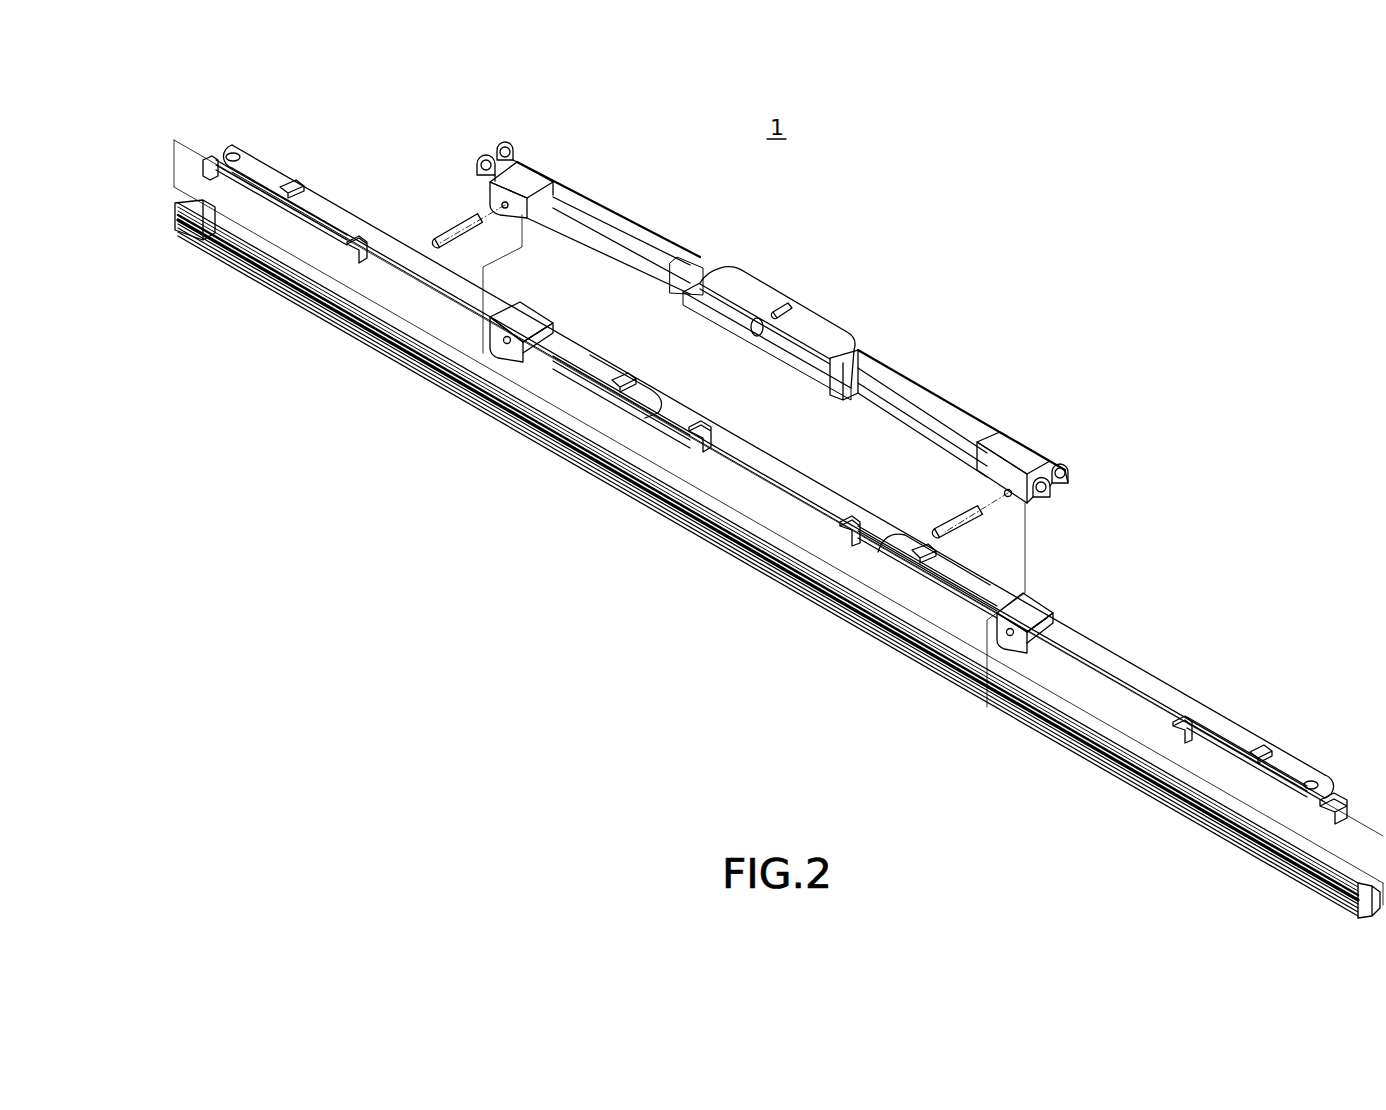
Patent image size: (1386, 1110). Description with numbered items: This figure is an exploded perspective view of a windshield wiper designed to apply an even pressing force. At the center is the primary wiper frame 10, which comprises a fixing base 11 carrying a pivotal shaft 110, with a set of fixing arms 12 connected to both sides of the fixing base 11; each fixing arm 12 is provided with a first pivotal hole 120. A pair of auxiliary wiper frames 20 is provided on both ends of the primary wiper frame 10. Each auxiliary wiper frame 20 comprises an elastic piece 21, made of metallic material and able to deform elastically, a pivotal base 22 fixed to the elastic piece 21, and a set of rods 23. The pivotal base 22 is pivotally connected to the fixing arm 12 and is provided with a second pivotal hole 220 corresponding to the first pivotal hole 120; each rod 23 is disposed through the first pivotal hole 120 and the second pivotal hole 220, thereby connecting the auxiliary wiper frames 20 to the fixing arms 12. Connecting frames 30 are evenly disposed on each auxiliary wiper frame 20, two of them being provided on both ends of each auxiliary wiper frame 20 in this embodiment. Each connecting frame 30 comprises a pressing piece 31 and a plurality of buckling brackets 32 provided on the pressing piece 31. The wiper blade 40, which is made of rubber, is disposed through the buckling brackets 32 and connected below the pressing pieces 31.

The primary wiper frame 10 is at (750, 322).
The fixing base 11 is at (733, 311).
The pivotal shaft 110 is at (777, 309).
The fixing arm 12 is at (930, 405).
The first pivotal hole 120 is at (1004, 492).
The auxiliary wiper frame 20 is at (768, 473).
The elastic piece 21 is at (1163, 690).
The pivotal base 22 is at (1034, 607).
The second pivotal hole 220 is at (1009, 636).
The rod 23 is at (960, 517).
The connecting frame 30 is at (1249, 785).
The pressing piece 31 is at (1282, 789).
The buckling bracket 32 is at (1312, 820).
The wiper blade 40 is at (733, 553).